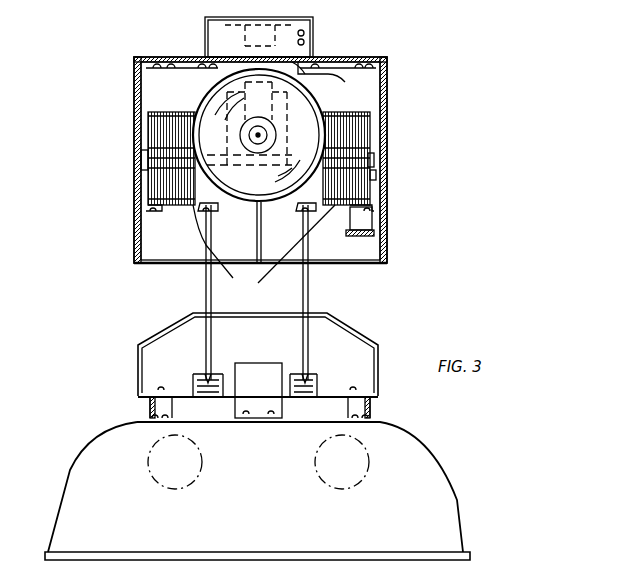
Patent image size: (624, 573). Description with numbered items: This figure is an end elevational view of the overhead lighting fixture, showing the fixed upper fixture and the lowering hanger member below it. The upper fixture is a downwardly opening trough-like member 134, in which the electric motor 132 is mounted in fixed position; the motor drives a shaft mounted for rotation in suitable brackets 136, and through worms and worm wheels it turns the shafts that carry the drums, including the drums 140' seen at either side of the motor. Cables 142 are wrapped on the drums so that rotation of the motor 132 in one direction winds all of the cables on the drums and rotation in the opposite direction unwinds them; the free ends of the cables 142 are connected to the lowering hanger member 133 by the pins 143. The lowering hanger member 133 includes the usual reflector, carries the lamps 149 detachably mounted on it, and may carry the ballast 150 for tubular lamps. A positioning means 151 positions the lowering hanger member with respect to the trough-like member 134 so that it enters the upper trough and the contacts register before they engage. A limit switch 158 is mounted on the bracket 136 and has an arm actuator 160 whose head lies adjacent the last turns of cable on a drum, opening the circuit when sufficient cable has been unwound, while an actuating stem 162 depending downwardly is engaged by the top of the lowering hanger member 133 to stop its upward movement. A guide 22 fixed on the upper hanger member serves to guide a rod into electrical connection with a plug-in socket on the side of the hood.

The guide 22 is at (313, 23).
The electric motor 132 is at (259, 135).
The lowering hanger member 133 is at (82, 455).
The trough-like member 134 is at (387, 125).
The brackets 136 is at (312, 76).
The drums 140' is at (289, 139).
The cables 142 is at (302, 287).
The pins 143 is at (205, 364).
The lamps 149 is at (187, 487).
The ballast 150 is at (258, 390).
The positioning means 151 is at (152, 338).
The limit switch 158 is at (373, 217).
The arm actuator 160 is at (365, 238).
The actuating stem 162 is at (262, 243).